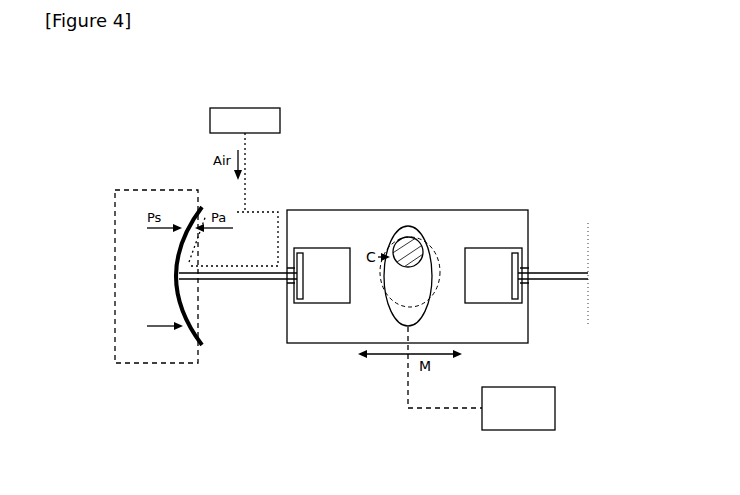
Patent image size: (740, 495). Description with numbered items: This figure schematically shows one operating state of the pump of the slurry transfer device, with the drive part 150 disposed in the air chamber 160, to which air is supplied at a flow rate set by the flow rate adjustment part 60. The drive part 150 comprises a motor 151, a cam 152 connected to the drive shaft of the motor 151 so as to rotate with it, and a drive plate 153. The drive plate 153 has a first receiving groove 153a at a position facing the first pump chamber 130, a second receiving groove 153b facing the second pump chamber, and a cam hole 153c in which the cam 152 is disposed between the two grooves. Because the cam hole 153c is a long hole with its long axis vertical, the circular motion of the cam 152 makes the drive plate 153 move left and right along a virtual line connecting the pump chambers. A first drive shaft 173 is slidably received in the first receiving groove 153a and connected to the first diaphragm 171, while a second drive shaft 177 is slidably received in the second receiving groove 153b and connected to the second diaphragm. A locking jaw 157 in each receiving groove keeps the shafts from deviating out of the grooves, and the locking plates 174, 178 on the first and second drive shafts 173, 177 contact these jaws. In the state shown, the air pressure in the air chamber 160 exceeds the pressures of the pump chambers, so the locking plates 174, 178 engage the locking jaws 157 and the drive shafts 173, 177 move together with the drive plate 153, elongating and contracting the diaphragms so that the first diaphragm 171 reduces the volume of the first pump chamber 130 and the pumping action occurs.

The flow rate adjustment part 60 is at (273, 108).
The first pump chamber 130 is at (115, 243).
The drive part 150 is at (409, 235).
The motor 151 is at (518, 430).
The cam 152 is at (403, 228).
The drive plate 153 is at (523, 210).
The first receiving groove 153a is at (327, 288).
The second receiving groove 153b is at (490, 288).
The cam hole 153c is at (408, 237).
The locking jaw 157 is at (289, 258).
The air chamber 160 is at (270, 210).
The first diaphragm 171 is at (197, 342).
The first drive shaft 173 is at (243, 280).
The locking plate 174 is at (306, 290).
The second drive shaft 177 is at (588, 273).
The locking plate 178 is at (520, 302).